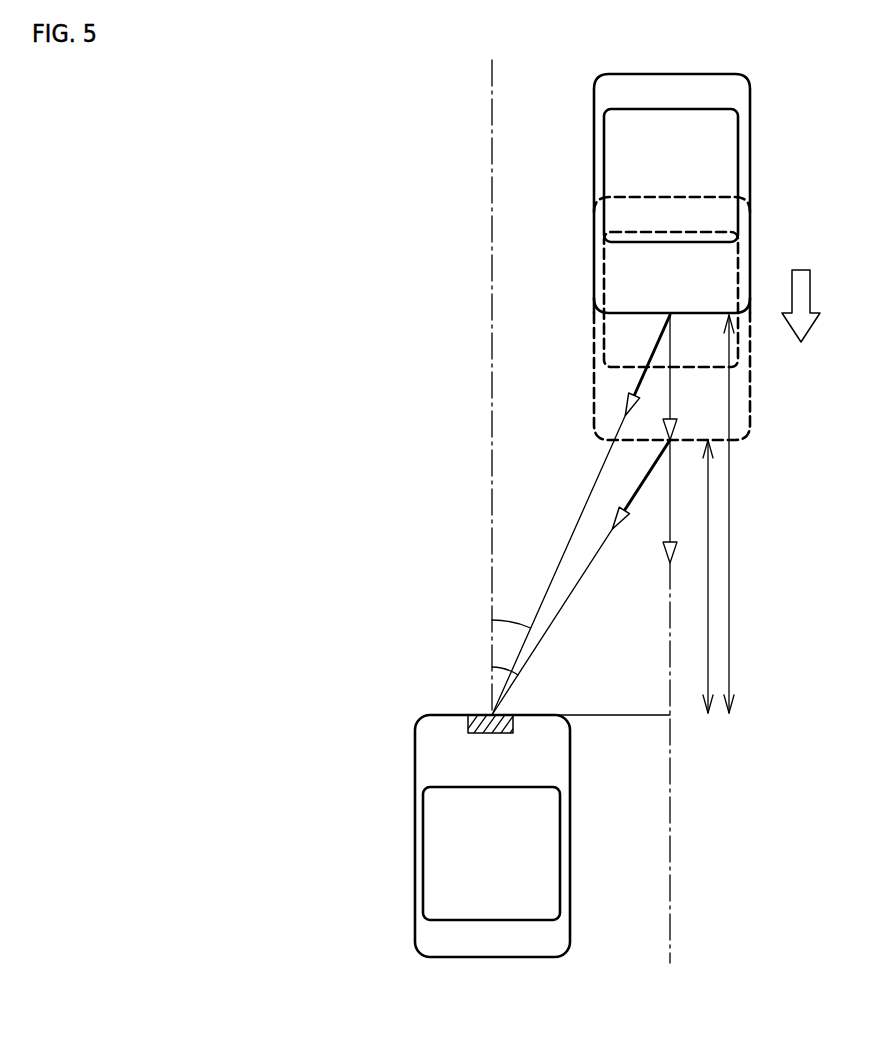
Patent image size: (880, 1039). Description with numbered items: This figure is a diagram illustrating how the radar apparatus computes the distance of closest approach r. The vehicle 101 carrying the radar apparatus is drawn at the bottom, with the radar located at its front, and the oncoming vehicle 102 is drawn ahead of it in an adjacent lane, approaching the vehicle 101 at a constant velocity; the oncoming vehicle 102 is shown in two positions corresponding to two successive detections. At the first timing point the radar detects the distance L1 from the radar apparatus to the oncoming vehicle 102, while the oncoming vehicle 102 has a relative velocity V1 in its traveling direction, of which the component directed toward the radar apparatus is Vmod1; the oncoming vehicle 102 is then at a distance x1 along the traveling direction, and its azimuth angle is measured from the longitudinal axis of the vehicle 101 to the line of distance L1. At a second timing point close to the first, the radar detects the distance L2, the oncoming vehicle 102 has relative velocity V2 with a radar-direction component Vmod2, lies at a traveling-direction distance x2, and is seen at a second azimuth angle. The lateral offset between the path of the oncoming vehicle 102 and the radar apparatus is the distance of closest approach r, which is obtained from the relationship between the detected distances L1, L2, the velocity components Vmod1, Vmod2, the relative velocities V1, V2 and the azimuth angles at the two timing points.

The vehicle 101 is at (422, 762).
The oncoming vehicle 102 is at (739, 104).
The relative velocity at first timing point V1 is at (682, 377).
The relative velocity at second timing point V2 is at (681, 501).
The relative velocity component in the radar-apparatus direction at first timing poi Vmod1 is at (637, 383).
The relative velocity component in the radar-apparatus direction at second timing po Vmod2 is at (638, 498).
The distance detected at first timing point L1 is at (581, 515).
The distance detected at second timing point L2 is at (581, 577).
The distance in the traveling direction x1 is at (742, 514).
The distance in the traveling direction at second timing point x2 is at (696, 576).
The distance of closest approach r is at (591, 699).